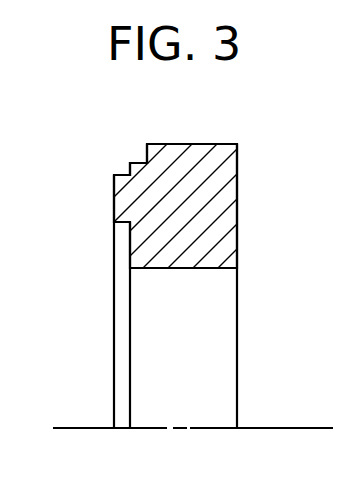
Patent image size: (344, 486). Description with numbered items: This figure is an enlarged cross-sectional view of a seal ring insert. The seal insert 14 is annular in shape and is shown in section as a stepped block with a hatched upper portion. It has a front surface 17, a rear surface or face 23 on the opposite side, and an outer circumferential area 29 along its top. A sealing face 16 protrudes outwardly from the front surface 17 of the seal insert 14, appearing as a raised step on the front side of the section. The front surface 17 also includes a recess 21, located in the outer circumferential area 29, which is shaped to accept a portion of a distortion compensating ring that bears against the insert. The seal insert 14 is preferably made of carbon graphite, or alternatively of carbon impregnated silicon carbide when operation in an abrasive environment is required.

The seal insert 14 is at (189, 252).
The sealing face 16 is at (113, 203).
The front surface 17 is at (131, 252).
The recess 21 is at (138, 157).
The rear surface 23 is at (237, 228).
The outer circumferential area 29 is at (180, 144).